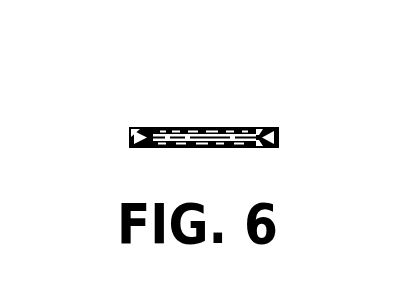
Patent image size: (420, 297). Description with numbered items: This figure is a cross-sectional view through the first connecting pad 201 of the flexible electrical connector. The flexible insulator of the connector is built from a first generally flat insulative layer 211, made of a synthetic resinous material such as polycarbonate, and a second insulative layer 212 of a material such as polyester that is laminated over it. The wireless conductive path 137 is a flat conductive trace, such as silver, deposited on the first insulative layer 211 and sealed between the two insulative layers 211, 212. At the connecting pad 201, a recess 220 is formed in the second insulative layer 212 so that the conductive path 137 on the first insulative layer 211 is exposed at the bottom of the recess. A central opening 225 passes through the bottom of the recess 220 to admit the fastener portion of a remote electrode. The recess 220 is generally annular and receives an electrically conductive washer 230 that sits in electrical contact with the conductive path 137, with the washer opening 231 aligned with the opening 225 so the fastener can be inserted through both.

The first connecting pad 201 is at (146, 118).
The first insulative layer 211 is at (130, 141).
The second insulative layer 212 is at (130, 135).
The recess 220 is at (237, 128).
The central opening 225 is at (200, 147).
The electrically conductive washer 230 is at (170, 128).
The washer opening 231 is at (212, 128).
The wireless conductive path 137 is at (258, 147).